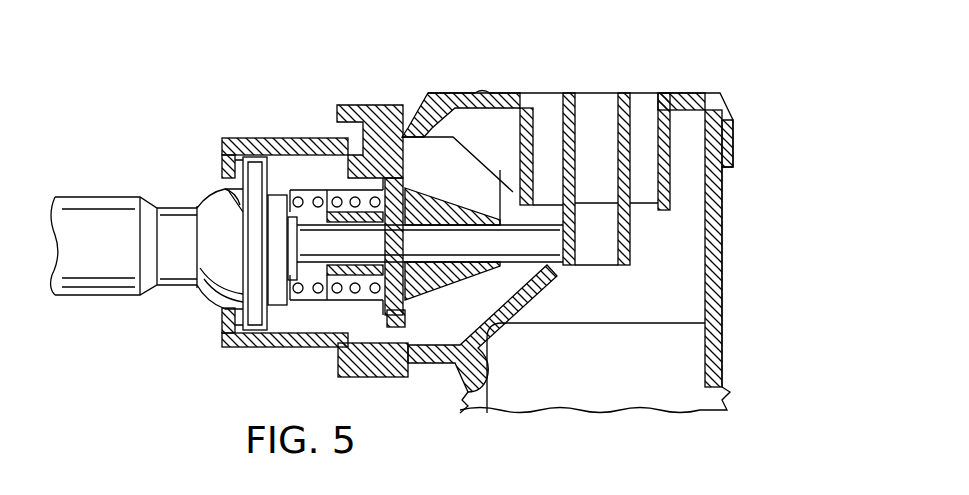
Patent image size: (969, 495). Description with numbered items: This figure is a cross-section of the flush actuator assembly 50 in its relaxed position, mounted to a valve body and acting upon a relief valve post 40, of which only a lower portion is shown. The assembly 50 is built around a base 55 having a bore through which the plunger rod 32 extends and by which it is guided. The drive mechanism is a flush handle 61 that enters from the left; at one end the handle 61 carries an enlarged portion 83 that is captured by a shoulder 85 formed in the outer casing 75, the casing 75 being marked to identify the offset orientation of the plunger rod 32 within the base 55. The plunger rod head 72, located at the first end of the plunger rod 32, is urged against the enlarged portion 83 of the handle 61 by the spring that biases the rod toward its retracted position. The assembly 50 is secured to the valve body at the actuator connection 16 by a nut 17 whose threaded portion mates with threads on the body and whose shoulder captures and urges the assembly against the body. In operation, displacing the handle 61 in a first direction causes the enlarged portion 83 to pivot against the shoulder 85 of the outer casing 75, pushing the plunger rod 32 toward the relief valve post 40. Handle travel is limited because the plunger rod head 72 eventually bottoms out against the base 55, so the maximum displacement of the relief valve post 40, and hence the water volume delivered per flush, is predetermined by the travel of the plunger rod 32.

The actuator connection 16 is at (435, 357).
The nut 17 is at (362, 378).
The plunger rod 32 is at (508, 195).
The relief valve post 40 is at (592, 107).
The flush actuator assembly 50 is at (180, 97).
The base 55 is at (385, 105).
The flush handle 61 is at (75, 197).
The plunger rod head 72 is at (285, 347).
The outer casing 75 is at (316, 137).
The enlarged portion 83 is at (265, 137).
The shoulder 85 is at (220, 192).